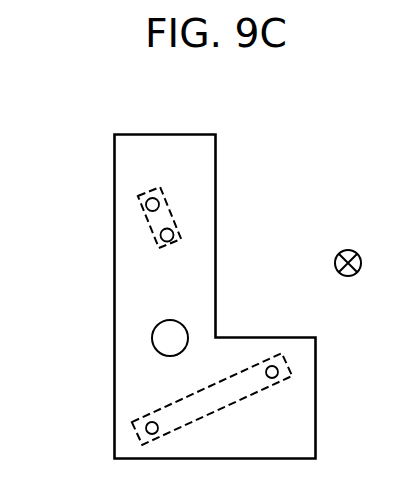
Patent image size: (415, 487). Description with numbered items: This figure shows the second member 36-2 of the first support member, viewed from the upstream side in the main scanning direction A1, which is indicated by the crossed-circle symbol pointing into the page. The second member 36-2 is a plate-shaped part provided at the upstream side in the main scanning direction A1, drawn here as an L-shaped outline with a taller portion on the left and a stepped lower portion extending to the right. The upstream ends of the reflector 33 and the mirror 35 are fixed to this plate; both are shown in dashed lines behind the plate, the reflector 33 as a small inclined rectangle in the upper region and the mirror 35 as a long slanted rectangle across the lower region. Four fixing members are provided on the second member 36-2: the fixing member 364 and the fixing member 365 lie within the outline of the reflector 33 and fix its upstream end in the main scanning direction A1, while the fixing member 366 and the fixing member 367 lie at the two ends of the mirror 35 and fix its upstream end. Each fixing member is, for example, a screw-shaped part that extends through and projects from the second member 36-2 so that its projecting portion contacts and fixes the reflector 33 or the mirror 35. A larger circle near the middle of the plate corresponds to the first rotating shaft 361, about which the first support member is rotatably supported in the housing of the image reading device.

The reflector 33 is at (160, 203).
The mirror 35 is at (193, 393).
The first rotating shaft 361 is at (152, 338).
The fixing member 364 is at (146, 204).
The fixing member 365 is at (160, 235).
The fixing member 366 is at (278, 371).
The fixing member 367 is at (146, 428).
The second member 36-2 is at (280, 323).
The main scanning direction A1 is at (349, 247).